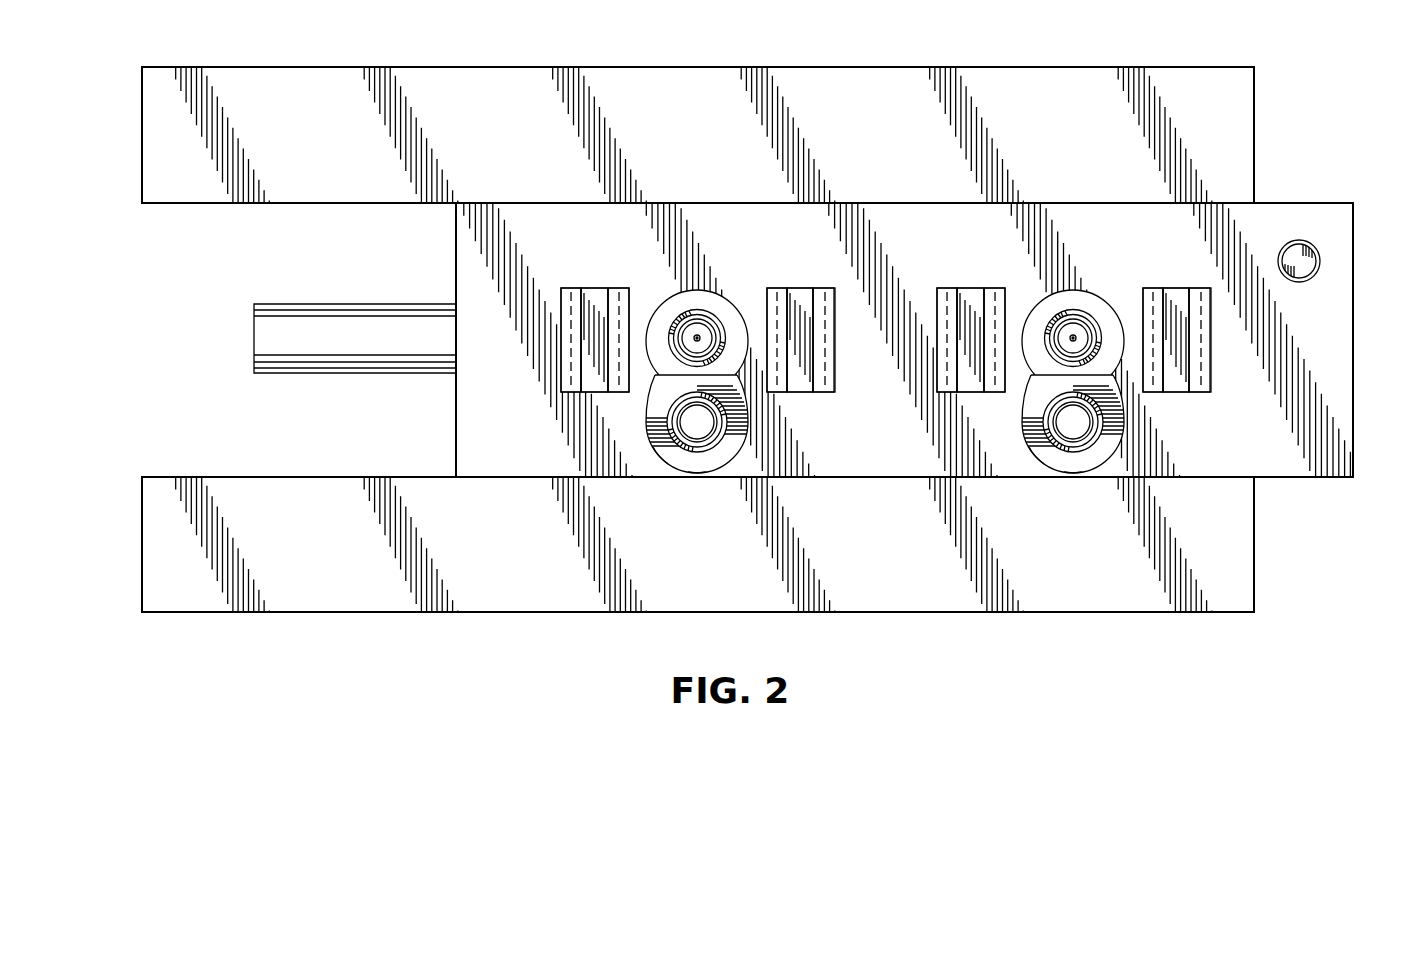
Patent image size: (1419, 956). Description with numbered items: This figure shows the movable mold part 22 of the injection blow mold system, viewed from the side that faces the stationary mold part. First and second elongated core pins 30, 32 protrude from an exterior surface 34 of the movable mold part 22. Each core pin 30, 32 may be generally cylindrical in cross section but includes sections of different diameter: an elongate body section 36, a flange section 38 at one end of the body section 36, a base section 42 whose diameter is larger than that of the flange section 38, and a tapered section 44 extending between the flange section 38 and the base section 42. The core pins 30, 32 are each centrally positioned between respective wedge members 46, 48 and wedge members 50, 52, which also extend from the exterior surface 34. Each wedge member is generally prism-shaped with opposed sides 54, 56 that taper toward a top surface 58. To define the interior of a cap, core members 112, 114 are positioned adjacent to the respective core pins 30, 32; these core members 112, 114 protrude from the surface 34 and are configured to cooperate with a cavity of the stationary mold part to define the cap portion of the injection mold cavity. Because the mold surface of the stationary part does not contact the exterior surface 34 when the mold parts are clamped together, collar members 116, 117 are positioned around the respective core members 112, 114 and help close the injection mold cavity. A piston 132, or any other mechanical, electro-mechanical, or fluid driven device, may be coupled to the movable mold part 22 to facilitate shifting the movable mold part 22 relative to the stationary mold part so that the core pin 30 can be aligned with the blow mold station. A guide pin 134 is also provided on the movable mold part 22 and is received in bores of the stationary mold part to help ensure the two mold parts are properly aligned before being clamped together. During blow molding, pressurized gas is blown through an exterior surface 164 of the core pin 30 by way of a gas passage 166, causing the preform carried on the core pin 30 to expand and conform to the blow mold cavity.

The movable mold part 22 is at (1359, 345).
The first core pin 30 is at (722, 316).
The second core pin 32 is at (1075, 357).
The exterior surface 34 is at (1273, 450).
The body section 36 is at (684, 333).
The flange section 38 is at (734, 382).
The base section 42 is at (673, 355).
The tapered section 44 is at (667, 439).
The wedge member 46 is at (571, 285).
The wedge member 48 is at (831, 285).
The wedge member 50 is at (947, 285).
The wedge member 52 is at (1207, 285).
The opposed side 54 is at (626, 297).
The opposed side 56 is at (565, 376).
The top surface 58 is at (598, 292).
The core member 112 is at (655, 464).
The core member 114 is at (1028, 481).
The collar member 116 is at (697, 472).
The collar member 117 is at (1068, 494).
The piston 132 is at (360, 310).
The guide pin 134 is at (1321, 259).
The exterior surface of core pin 164 is at (695, 335).
The gas passage 166 is at (699, 337).